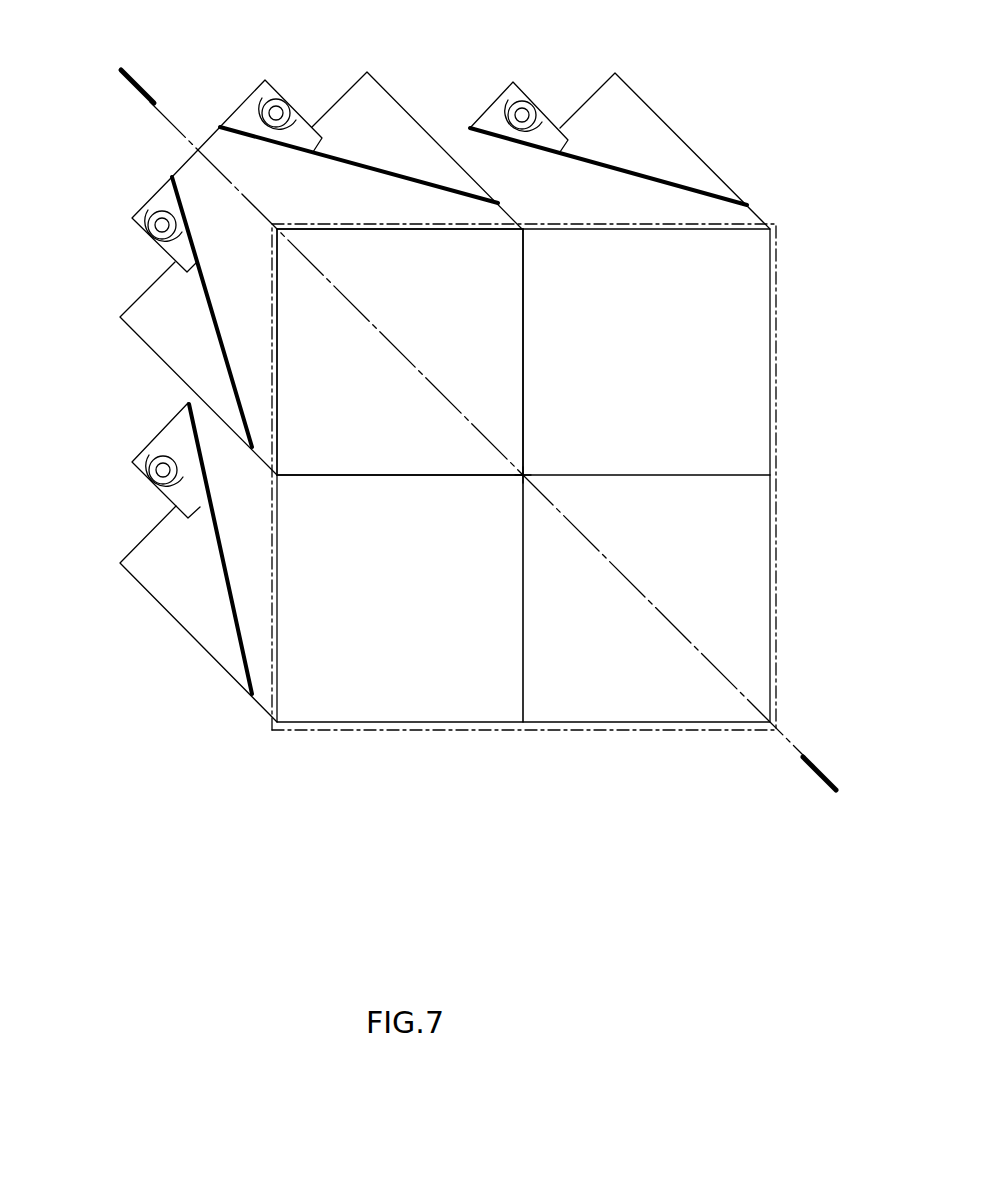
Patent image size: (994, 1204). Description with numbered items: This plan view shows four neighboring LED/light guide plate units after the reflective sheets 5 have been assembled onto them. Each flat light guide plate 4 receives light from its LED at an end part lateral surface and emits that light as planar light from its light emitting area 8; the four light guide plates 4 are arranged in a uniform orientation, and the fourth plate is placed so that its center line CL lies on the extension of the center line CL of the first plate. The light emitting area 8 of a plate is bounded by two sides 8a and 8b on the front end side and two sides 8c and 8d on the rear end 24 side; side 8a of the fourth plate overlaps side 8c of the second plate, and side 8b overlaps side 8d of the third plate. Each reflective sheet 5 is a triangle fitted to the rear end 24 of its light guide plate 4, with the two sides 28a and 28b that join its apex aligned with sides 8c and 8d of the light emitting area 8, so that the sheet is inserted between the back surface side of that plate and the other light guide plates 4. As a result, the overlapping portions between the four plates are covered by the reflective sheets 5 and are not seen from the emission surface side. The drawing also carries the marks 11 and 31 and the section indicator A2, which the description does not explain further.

The light guide plate 4 is at (473, 113).
The reflective sheet 5 is at (378, 113).
The light emitting area 8 is at (297, 320).
The side of light emitting area on front end side 8a is at (281, 398).
The side of light emitting area on front end side 8b is at (362, 230).
The side of light emitting area on rear end side 8c is at (520, 307).
The side of light emitting area on rear end side 8d is at (415, 473).
The reference line 11 is at (204, 135).
The rear end 24 is at (518, 483).
The side of reflective sheet 28a is at (525, 368).
The side of reflective sheet 28b is at (373, 478).
The positioning guide 31 is at (780, 540).
The center line CL is at (732, 688).
The section line A2 is at (136, 88).